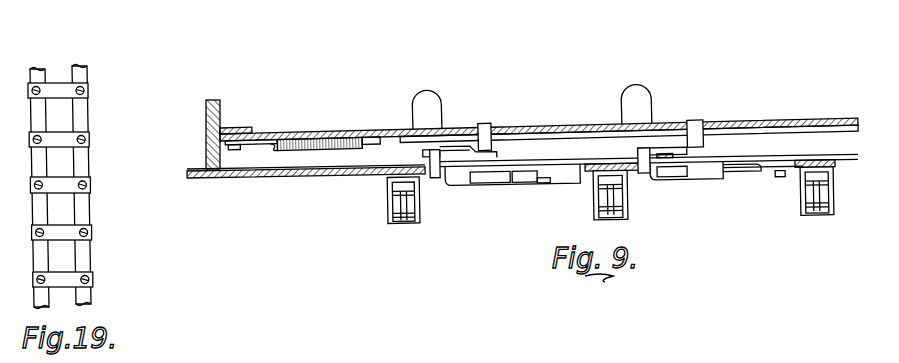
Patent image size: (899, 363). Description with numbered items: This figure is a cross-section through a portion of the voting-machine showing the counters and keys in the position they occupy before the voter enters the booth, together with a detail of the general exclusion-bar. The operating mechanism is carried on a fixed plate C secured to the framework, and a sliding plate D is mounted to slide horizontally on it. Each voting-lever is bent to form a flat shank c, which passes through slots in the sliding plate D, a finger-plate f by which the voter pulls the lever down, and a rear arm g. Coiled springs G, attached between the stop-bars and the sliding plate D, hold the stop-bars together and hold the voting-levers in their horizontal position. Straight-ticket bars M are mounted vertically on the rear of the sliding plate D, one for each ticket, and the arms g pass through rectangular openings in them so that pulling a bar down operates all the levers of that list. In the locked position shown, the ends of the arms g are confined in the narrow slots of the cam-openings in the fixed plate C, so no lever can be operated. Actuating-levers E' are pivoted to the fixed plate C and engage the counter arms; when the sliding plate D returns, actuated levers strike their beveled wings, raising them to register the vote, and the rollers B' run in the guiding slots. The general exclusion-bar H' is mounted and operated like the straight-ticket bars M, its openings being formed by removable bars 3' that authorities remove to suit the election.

In FIG. 19, the removable bars 3' is at (60, 165).
In FIG. 19, the general exclusion-bar H' is at (81, 187).
In FIG. 9, the sliding plate D is at (357, 133).
In FIG. 9, the coiled springs G is at (303, 140).
In FIG. 9, the finger-plate f is at (431, 108).
In FIG. 9, the flat shank c is at (490, 128).
In FIG. 9, the fixed plate C is at (370, 172).
In FIG. 9, the actuating-levers E' is at (649, 189).
In FIG. 9, the straight-ticket bars M is at (480, 155).
In FIG. 9, the rear arm g is at (434, 182).
In FIG. 9, the roller B' is at (616, 214).